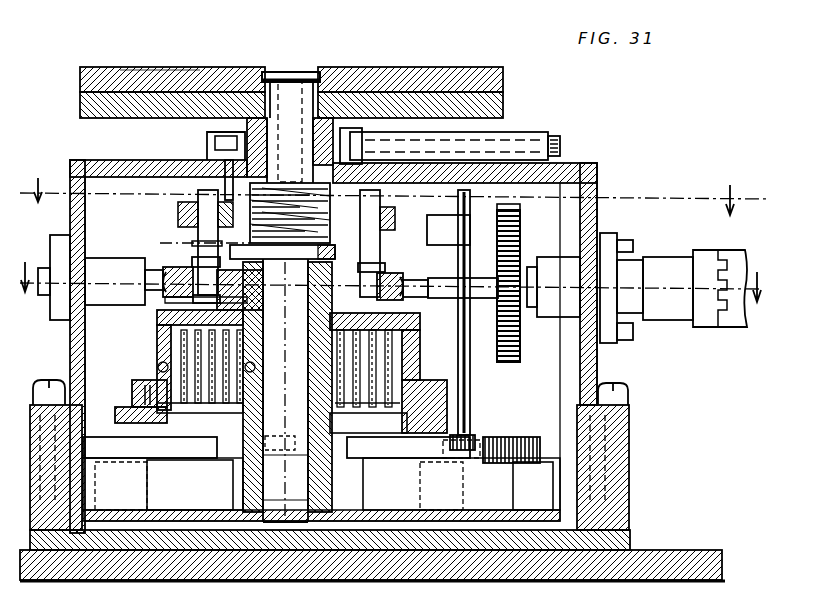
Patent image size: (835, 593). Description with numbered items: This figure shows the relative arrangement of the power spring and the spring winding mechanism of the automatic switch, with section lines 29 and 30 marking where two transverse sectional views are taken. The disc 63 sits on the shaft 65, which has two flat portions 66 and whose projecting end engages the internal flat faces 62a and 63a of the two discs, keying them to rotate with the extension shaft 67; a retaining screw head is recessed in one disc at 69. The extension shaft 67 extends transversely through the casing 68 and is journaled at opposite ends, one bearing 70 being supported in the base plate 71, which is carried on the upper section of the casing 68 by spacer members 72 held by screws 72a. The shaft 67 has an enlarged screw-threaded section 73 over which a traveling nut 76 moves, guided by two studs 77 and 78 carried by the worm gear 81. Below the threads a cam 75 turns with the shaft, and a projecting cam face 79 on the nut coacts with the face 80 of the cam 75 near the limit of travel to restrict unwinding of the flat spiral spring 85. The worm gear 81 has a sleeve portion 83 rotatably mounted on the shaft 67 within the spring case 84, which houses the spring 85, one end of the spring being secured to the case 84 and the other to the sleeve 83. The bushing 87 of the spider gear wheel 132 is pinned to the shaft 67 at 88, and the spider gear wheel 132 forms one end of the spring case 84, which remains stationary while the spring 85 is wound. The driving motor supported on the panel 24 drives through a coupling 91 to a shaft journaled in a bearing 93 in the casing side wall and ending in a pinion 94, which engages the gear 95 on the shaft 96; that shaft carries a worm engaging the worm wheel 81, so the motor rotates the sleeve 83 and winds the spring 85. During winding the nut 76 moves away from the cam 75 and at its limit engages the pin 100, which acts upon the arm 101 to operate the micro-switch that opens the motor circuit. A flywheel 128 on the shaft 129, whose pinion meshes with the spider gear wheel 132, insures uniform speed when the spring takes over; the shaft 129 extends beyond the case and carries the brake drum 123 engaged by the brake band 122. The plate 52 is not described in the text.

The panel 24 is at (672, 570).
The casing 68 is at (258, 75).
The top plate upper layer 52 is at (505, 84).
The disc 63 is at (505, 109).
The internal flat face 63a is at (168, 90).
The internal flat face 62a is at (250, 100).
The shaft 65 is at (342, 72).
The bearing 69 is at (278, 70).
The flat portion 66 is at (300, 78).
The arm 101 is at (225, 135).
The pin 100 is at (230, 165).
The brake band 122 is at (567, 154).
The brake drum 123 is at (560, 133).
The screw-threaded section 73 is at (290, 162).
The cam 75 is at (282, 259).
The projecting cam face 79 is at (292, 262).
The bearing 70 is at (333, 490).
The extension shaft 67 is at (292, 420).
The sleeve portion 83 is at (285, 477).
The cam face 80 is at (180, 258).
The worm gear 81 is at (175, 298).
The traveling nut 76 is at (178, 220).
The stud 77 is at (190, 243).
The stud 78 is at (375, 265).
The spring case 84 is at (160, 345).
The flat spiral spring 85 is at (160, 370).
The shaft 129 is at (470, 385).
The spider gear wheel 132 is at (476, 420).
The shaft 96 is at (455, 280).
The pinion 94 is at (497, 300).
The gear 95 is at (521, 226).
The bearing 93 is at (560, 268).
The coupling 91 is at (708, 322).
The pin 88 is at (240, 444).
The bushing 87 is at (347, 447).
The flywheel 128 is at (493, 464).
The spacer member 72 is at (150, 472).
The screw 72a is at (147, 492).
The base plate 71 is at (406, 512).
The section line 30 is at (389, 196).
The section line 29 is at (398, 282).